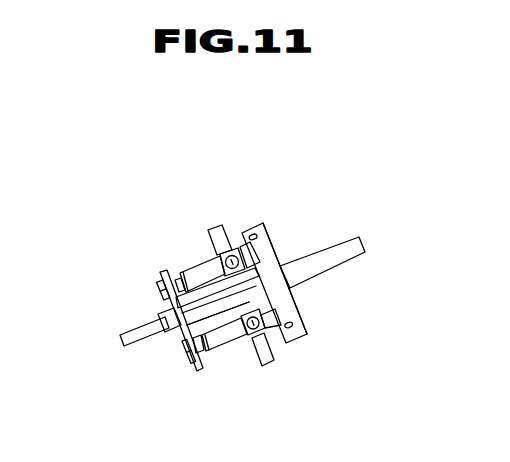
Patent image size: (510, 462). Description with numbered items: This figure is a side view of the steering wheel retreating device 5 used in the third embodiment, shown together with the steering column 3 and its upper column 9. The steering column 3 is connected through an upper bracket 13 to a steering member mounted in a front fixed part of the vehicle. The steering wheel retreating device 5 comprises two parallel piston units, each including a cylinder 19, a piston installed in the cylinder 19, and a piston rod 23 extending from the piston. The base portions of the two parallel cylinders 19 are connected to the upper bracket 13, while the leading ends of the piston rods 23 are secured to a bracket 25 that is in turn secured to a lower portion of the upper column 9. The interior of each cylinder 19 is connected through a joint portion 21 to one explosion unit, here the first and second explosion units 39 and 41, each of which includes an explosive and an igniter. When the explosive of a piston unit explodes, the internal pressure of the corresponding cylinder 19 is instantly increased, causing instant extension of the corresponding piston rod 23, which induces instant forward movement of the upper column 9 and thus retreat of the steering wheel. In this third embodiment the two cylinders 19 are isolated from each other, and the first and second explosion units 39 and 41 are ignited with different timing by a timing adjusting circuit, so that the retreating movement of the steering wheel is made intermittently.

The steering column 3 is at (314, 226).
The steering wheel retreating device 5 is at (208, 210).
The upper column 9 is at (297, 258).
The upper bracket 13 is at (298, 301).
The cylinder 19 is at (194, 266).
The joint portion 21 is at (246, 345).
The piston rod 23 is at (165, 266).
The bracket 25 is at (172, 340).
The first explosion unit 39 is at (266, 357).
The second explosion unit 41 is at (236, 252).